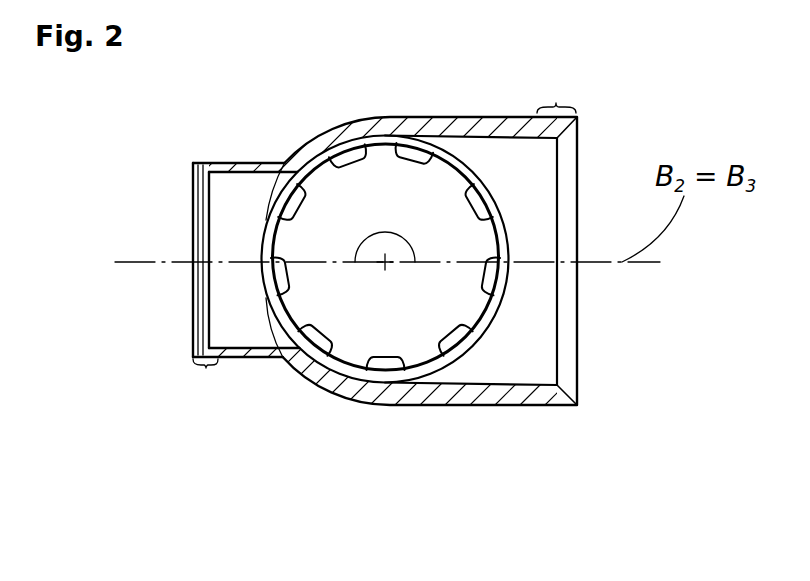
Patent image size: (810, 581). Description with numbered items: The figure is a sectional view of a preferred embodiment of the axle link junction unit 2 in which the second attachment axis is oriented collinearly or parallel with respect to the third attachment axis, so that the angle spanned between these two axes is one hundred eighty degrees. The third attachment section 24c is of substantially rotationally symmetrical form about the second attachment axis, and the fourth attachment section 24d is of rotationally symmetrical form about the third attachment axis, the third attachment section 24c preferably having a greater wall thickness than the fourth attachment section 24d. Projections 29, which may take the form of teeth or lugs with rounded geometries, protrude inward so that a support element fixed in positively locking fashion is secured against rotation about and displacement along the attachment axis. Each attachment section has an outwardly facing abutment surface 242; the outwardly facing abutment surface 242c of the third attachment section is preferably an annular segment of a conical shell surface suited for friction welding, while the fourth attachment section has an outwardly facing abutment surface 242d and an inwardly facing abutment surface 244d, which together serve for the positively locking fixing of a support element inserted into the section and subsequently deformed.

The axle link junction unit 2 is at (405, 290).
The third attachment section 24c is at (562, 91).
The fourth attachment section 24d is at (204, 370).
The projection 29 is at (415, 166).
The outwardly facing abutment surface 242 is at (405, 290).
The outwardly facing abutment surface of the third attachment section 242c is at (578, 121).
The outwardly facing abutment surface of the fourth attachment section 242d is at (195, 323).
The inwardly facing abutment surface of the fourth attachment section 244d is at (208, 175).